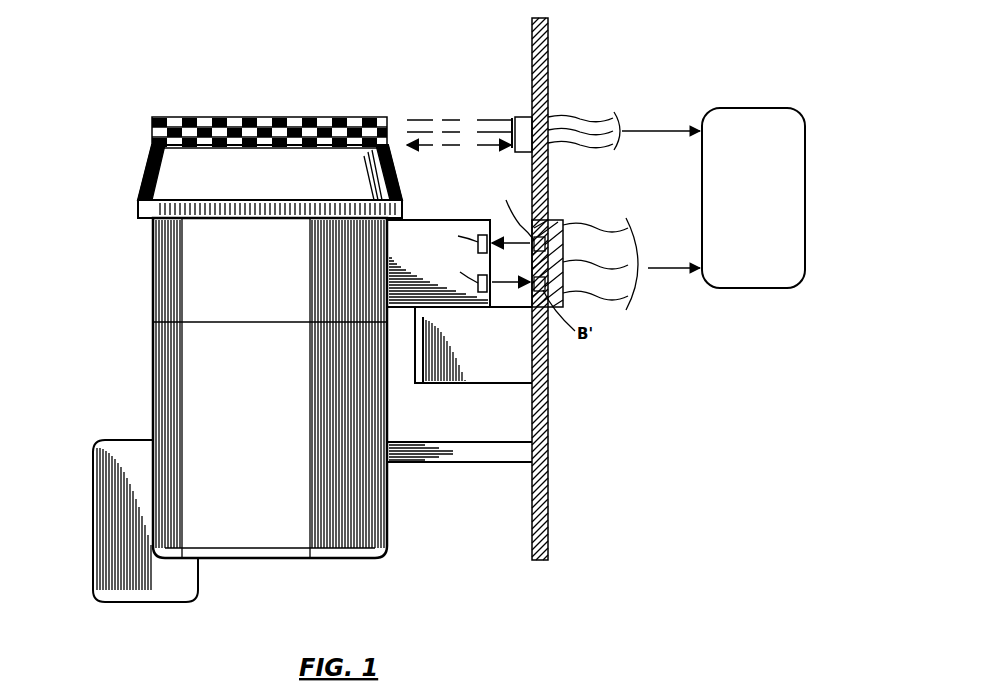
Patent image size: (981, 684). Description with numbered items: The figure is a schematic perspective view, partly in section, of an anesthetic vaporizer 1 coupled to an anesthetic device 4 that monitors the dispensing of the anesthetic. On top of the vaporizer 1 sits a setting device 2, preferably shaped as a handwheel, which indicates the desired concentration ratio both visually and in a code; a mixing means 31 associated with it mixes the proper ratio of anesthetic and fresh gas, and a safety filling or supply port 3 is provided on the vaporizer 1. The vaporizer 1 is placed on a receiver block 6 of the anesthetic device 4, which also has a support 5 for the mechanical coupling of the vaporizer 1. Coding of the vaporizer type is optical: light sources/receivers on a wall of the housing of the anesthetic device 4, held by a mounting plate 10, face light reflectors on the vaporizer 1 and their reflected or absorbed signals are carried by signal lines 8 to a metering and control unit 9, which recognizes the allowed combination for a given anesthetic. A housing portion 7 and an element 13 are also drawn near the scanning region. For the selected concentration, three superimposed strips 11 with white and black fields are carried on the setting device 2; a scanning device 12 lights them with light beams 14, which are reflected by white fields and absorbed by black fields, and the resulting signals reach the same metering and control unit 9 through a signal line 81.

The anesthetic vaporizer 1 is at (345, 548).
The setting device 2 is at (178, 184).
The safety filling or supply port 3 is at (170, 573).
The anesthetic device 4 is at (540, 520).
The support 5 is at (513, 455).
The receiver block 6 is at (493, 333).
The sensor housing 7 is at (436, 222).
The signal lines 8 is at (660, 268).
The metering and control unit 9 is at (762, 135).
The mounting plate 10 is at (560, 220).
The superimposed strips 11 is at (254, 117).
The scanning device 12 is at (523, 130).
The receiver window 13 is at (514, 121).
The light beams 14 is at (420, 120).
The mixing means 31 is at (150, 208).
The signal line 81 is at (660, 131).